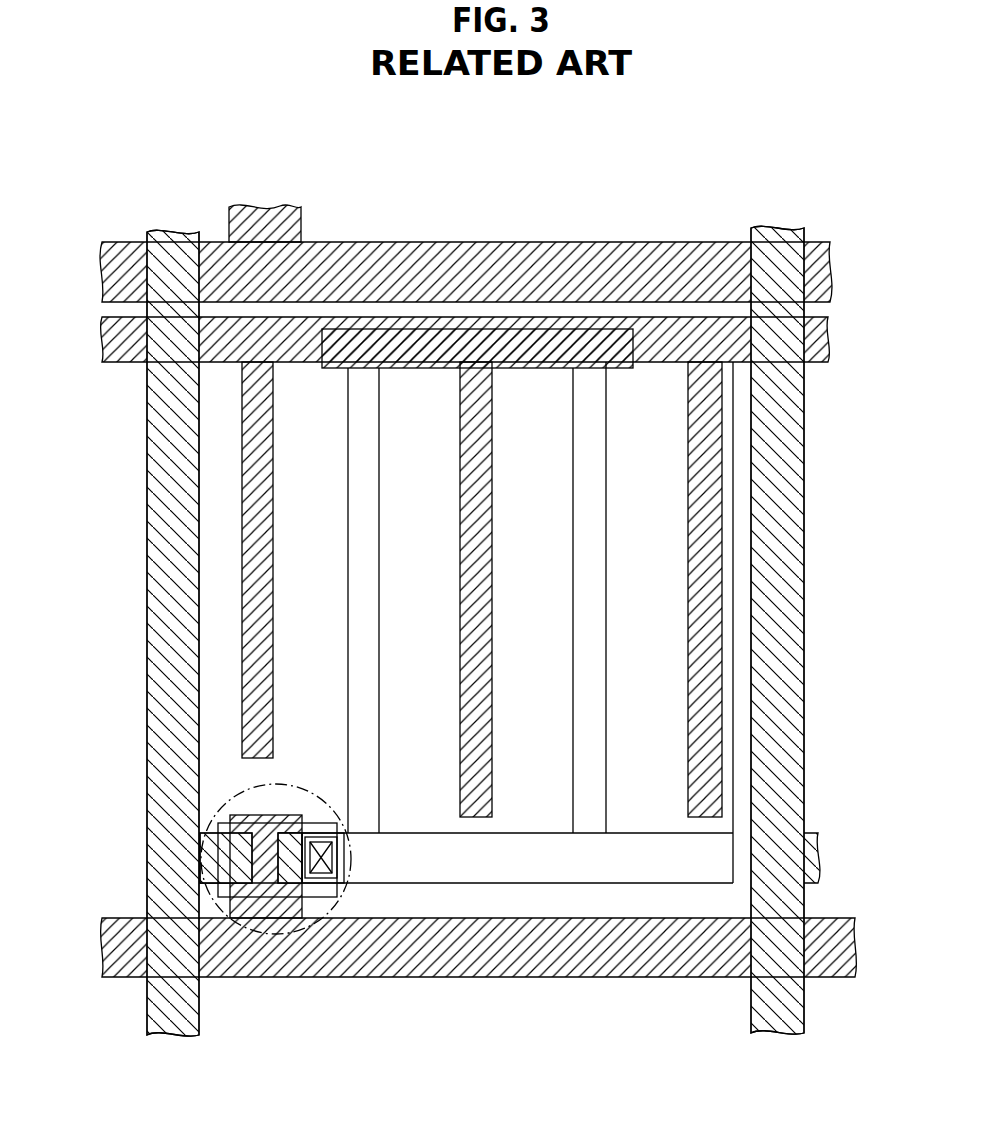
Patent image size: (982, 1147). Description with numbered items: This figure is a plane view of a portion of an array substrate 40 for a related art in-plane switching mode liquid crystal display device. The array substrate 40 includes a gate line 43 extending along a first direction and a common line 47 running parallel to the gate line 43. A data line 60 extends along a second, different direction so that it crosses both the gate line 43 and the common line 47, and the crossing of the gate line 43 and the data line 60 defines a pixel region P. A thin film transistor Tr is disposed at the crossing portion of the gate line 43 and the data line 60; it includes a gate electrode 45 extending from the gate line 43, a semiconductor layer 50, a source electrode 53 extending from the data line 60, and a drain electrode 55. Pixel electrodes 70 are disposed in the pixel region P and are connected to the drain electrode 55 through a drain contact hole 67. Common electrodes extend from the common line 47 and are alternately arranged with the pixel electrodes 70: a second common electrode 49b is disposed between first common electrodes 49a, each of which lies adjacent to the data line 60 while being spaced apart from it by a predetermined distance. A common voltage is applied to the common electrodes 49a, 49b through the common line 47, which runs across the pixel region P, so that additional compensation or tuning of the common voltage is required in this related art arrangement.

The array substrate 40 is at (620, 185).
The gate line 43 is at (647, 967).
The gate electrode 45 is at (240, 908).
The common line 47 is at (373, 322).
The first common electrodes 49a is at (260, 602).
The second common electrode 49b is at (477, 603).
The semiconductor layer 50 is at (308, 835).
The source electrode 53 is at (205, 847).
The drain electrode 55 is at (290, 868).
The data line 60 is at (158, 490).
The drain contact hole 67 is at (347, 855).
The pixel electrodes 70 is at (363, 717).
The pixel region P is at (667, 505).
The thin film transistor Tr is at (290, 935).